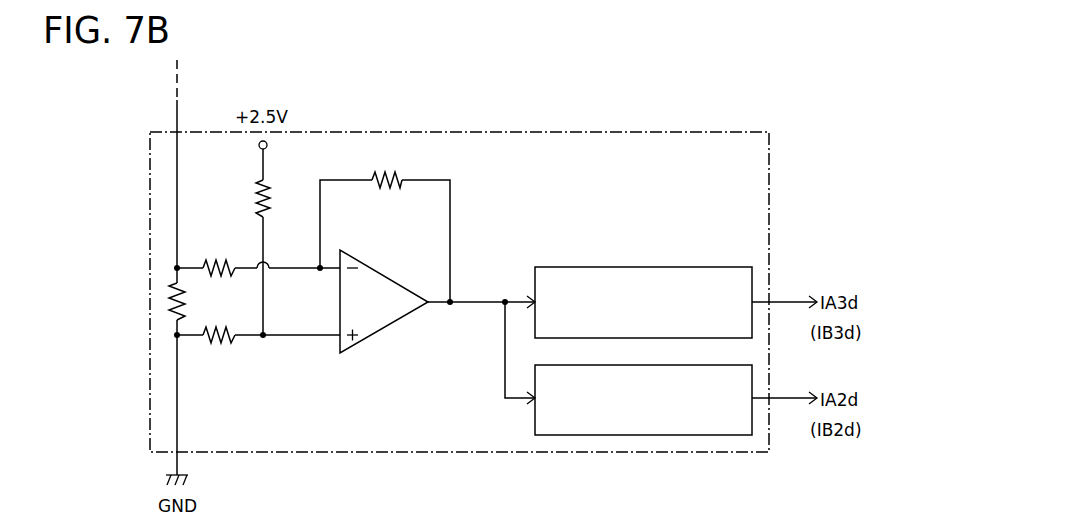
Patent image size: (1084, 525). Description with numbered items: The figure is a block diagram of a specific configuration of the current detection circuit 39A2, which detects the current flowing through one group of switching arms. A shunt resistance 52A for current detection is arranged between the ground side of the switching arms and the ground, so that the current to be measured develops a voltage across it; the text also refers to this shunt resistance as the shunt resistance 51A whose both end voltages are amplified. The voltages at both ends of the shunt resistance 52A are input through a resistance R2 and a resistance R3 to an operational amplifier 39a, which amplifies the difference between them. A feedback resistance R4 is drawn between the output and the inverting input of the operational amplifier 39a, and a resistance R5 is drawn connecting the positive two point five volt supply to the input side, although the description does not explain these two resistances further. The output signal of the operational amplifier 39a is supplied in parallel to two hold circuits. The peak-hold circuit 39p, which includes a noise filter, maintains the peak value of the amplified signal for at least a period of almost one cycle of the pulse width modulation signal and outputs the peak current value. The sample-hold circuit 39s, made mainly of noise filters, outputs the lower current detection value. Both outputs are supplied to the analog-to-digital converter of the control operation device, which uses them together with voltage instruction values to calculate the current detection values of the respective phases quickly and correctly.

The shunt resistance 51A is at (423, 286).
The shunt resistance 52A is at (170, 293).
The current detection circuit 39A2 is at (693, 130).
The operational amplifier 39a is at (372, 263).
The peak-hold circuit 39p is at (688, 267).
The sample-hold circuit 39s is at (663, 437).
The resistance R2 is at (258, 282).
The resistance R3 is at (258, 349).
The feedback resistor R4 is at (397, 177).
The pull-up resistor R5 is at (249, 242).